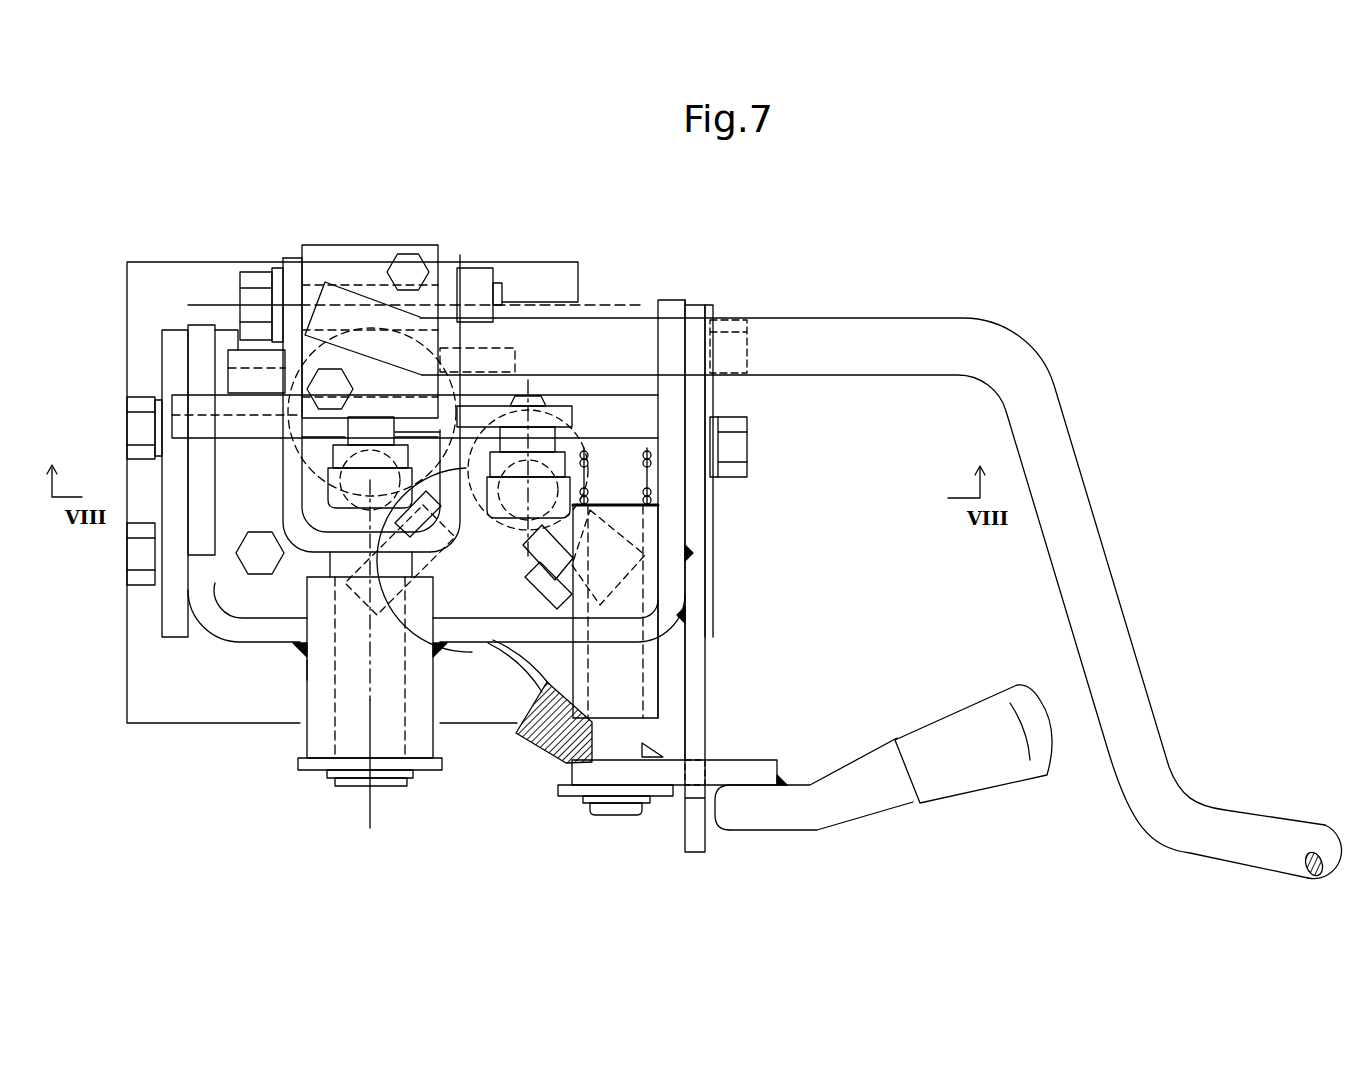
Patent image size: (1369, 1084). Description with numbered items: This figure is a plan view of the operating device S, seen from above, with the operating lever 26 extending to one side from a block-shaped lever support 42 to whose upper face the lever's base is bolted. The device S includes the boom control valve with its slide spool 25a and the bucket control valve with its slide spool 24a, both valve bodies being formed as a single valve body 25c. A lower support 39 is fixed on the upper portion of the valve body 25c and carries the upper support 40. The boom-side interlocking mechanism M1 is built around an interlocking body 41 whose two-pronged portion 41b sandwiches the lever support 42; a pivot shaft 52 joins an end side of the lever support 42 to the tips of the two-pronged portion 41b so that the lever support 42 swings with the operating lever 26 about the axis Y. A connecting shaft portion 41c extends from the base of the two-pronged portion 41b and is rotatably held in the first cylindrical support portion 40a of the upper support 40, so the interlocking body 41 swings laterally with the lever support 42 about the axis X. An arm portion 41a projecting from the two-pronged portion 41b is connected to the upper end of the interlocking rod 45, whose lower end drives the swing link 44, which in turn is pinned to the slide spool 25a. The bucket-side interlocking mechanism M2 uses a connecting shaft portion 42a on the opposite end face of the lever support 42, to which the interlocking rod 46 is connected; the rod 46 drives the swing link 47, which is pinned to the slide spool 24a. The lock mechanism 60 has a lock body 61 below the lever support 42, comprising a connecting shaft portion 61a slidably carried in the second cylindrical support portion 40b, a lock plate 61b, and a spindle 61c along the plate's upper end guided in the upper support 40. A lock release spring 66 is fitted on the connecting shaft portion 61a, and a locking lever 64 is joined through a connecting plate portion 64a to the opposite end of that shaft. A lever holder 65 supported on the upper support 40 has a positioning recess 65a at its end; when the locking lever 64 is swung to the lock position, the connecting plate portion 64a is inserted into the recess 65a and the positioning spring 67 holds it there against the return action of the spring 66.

The interlocking body 41 is at (290, 250).
The lever support 42 is at (330, 245).
The pivot shaft 52 is at (370, 278).
The connecting shaft portion 42a is at (392, 430).
The two-pronged portion 41b is at (457, 302).
The lock body 61 is at (222, 378).
The boom-side interlocking mechanism M1 is at (556, 403).
The arm portion 41a is at (572, 416).
The spindle 61c is at (692, 402).
The lock plate 61b is at (248, 395).
The slide spool 24a is at (328, 470).
The lock release spring 66 is at (648, 498).
The interlocking rod 45 is at (650, 512).
The slide spool 25a is at (528, 484).
The interlocking rod 46 is at (350, 512).
The swing link 44 is at (653, 587).
The lower support 39 is at (167, 612).
The bucket-side interlocking mechanism M2 is at (370, 667).
The upper support 40 is at (273, 643).
The swing link 47 is at (443, 568).
The second cylindrical support portion 40b is at (655, 665).
The first cylindrical support portion 40a is at (305, 675).
The positioning recess 65a is at (680, 776).
The valve body 25c is at (160, 725).
The connecting shaft portion 41c is at (347, 788).
The positioning spring 67 is at (543, 753).
The connecting shaft portion 61a is at (611, 818).
The connecting plate portion 64a is at (743, 778).
The locking lever 64 is at (978, 782).
The lever holder 65 is at (690, 855).
The lock mechanism 60 is at (812, 850).
The operating lever 26 is at (1208, 845).
The operating device S is at (1102, 352).
The axis X is at (371, 669).
The axis Y is at (406, 303).